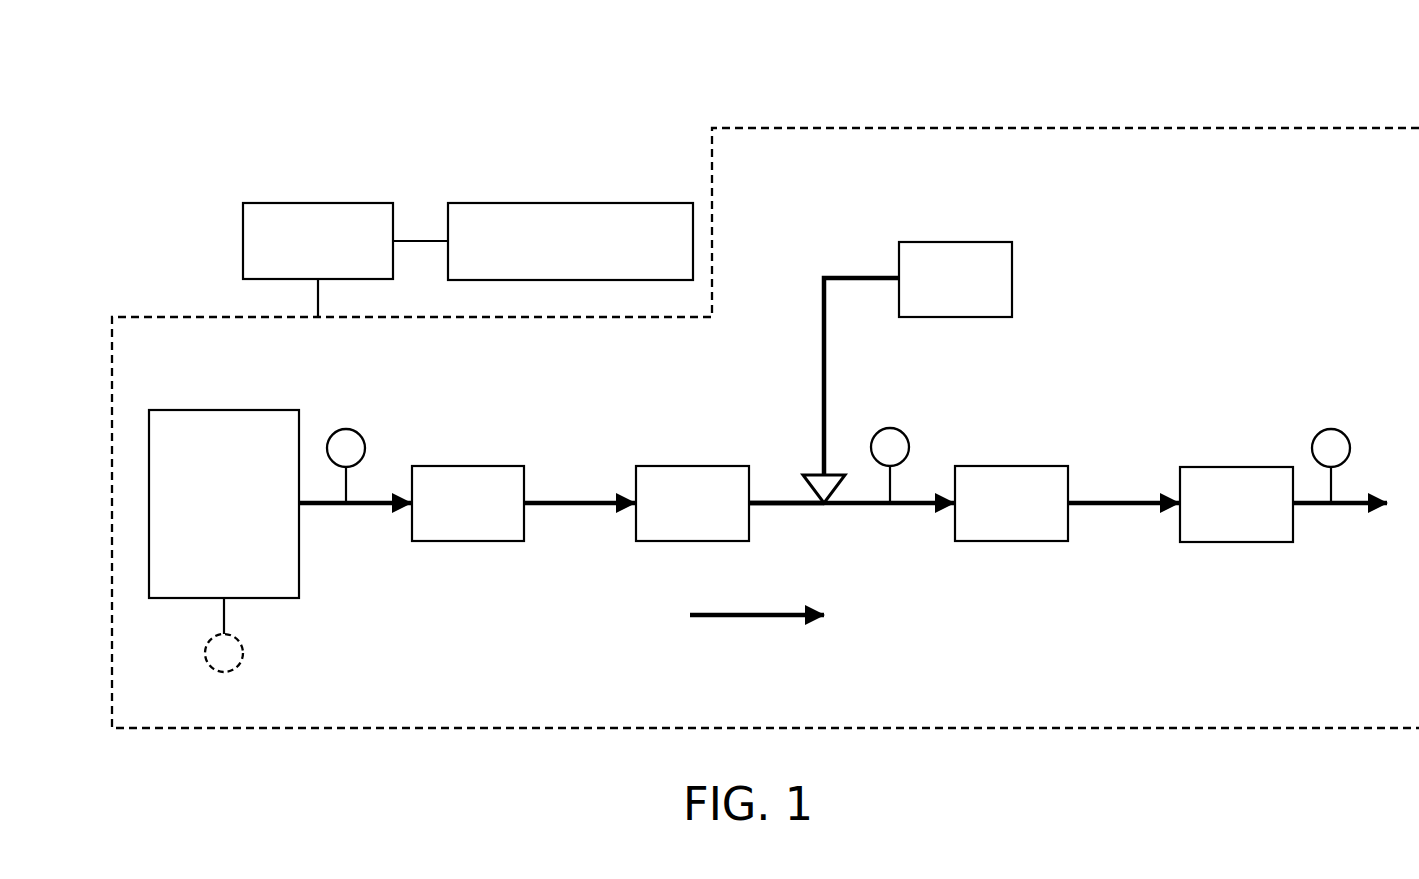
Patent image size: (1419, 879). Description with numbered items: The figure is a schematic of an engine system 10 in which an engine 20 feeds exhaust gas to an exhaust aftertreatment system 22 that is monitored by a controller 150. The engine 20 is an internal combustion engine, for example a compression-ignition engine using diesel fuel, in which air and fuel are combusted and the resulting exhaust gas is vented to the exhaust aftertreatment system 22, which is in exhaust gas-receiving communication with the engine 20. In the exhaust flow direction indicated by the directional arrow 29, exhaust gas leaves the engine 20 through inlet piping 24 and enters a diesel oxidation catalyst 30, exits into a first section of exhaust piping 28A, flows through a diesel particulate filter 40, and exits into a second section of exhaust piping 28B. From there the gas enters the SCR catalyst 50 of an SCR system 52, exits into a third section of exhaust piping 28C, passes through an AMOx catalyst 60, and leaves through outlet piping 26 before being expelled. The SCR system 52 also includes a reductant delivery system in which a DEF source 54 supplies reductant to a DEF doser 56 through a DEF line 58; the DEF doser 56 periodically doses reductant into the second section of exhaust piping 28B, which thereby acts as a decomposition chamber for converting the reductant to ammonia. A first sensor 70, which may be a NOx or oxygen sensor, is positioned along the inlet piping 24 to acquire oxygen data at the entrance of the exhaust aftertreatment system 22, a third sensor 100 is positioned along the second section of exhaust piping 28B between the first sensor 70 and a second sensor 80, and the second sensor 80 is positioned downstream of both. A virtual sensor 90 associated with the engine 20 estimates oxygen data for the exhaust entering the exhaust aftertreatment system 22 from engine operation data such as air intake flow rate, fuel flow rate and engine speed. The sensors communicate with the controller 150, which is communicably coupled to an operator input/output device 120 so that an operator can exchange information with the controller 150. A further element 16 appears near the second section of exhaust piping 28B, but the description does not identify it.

The engine system 10 is at (1031, 50).
The exhaust conduit section 16 is at (786, 439).
The engine 20 is at (210, 530).
The exhaust aftertreatment system 22 is at (540, 657).
The inlet piping 24 is at (352, 506).
The outlet piping 26 is at (1340, 506).
The first section of exhaust piping 28A is at (552, 506).
The second section of exhaust piping 28B is at (787, 506).
The third section of exhaust piping 28C is at (1093, 506).
The directional arrow 29 is at (748, 618).
The diesel oxidation catalyst (DOC) 30 is at (454, 530).
The diesel particulate filter (DPF) 40 is at (679, 530).
The SCR catalyst 50 is at (998, 530).
The SCR system 52 is at (938, 202).
The DEF source 54 is at (942, 304).
The DEF doser 56 is at (836, 507).
The DEF line 58 is at (823, 333).
The AMOx catalyst 60 is at (1223, 530).
The first sensor 70 is at (346, 429).
The second sensor 80 is at (1331, 429).
The virtual sensor 90 is at (243, 653).
The third sensor 100 is at (890, 428).
The operator input/output (I/O) device 120 is at (592, 268).
The controller 150 is at (298, 267).